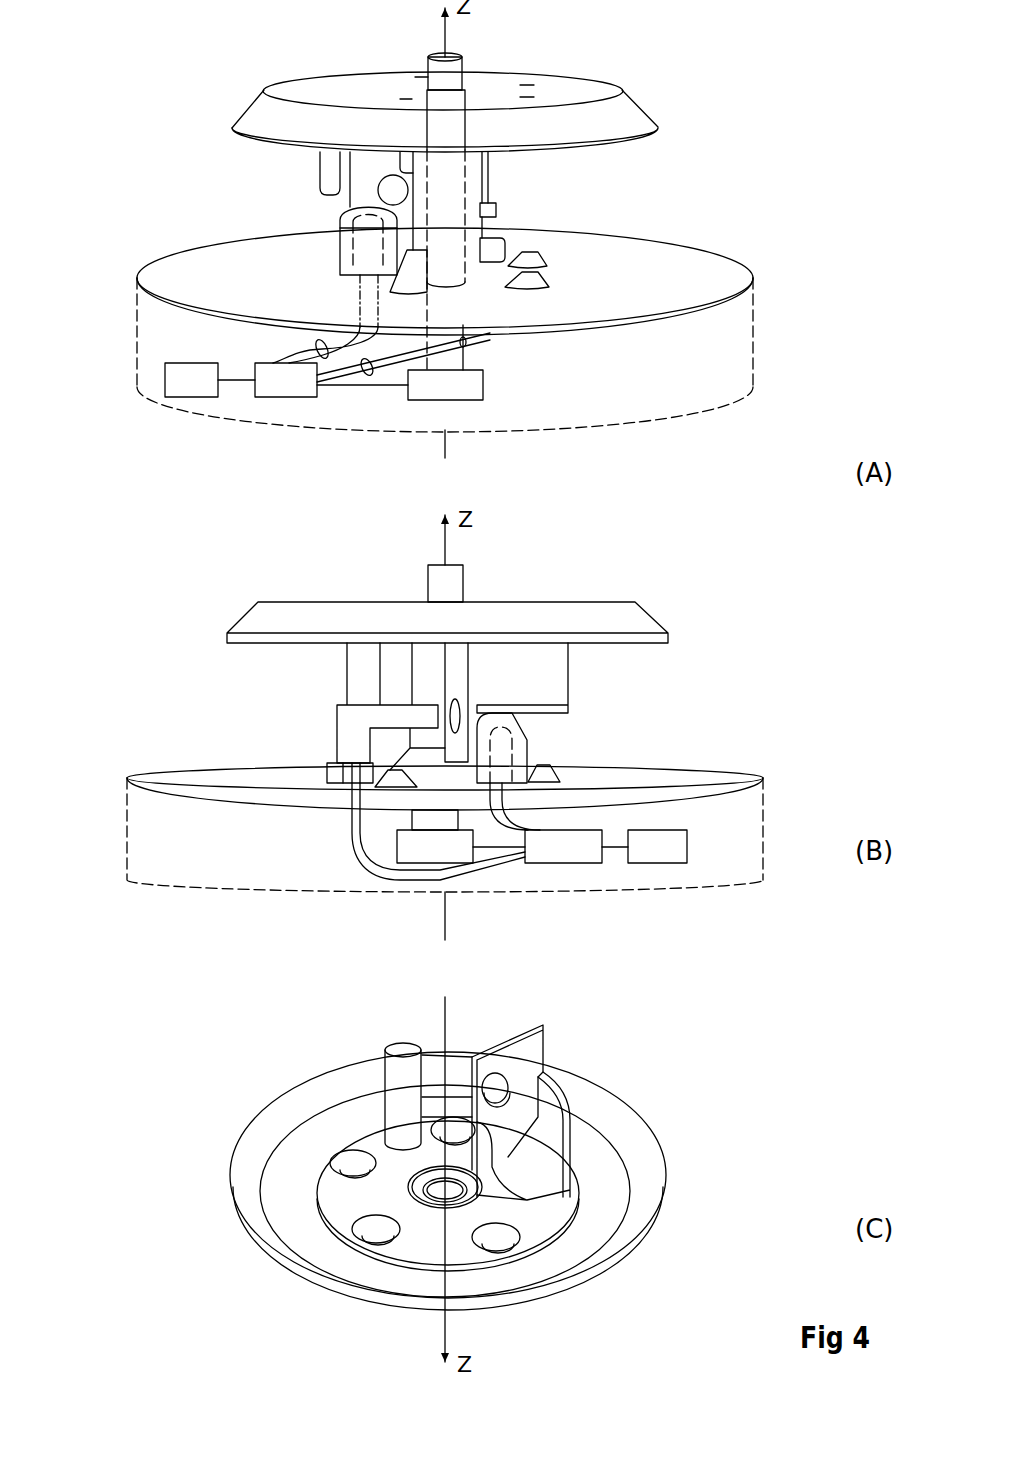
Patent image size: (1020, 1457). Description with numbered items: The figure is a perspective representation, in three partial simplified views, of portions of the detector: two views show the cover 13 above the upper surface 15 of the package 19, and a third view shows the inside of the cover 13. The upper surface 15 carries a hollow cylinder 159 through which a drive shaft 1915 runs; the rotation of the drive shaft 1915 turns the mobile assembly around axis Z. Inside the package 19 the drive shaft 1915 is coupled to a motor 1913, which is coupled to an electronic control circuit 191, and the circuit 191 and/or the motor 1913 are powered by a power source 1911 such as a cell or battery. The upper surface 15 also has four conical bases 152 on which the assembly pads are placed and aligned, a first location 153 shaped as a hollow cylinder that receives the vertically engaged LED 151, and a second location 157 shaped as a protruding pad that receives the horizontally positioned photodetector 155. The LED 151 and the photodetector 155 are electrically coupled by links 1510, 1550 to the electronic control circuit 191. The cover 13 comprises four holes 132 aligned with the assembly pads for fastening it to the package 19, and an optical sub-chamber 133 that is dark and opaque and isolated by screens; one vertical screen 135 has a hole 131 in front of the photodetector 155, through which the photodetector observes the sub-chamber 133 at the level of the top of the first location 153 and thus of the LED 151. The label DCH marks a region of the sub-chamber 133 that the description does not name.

The cover 13 is at (613, 73).
The hole 131 is at (398, 190).
The holes 132 is at (367, 1232).
The optical sub-chamber 133 is at (304, 164).
The screen 135 is at (542, 1021).
The upper surface 15 is at (768, 280).
The LED 151 is at (366, 248).
The conical bases 152 is at (548, 276).
The first location 153 is at (332, 262).
The photodetector 155 is at (502, 209).
The second location 157 is at (510, 245).
The hollow cylinder 159 is at (473, 173).
The package 19 is at (678, 422).
The electronic control circuit 191 is at (288, 401).
The power source 1911 is at (187, 401).
The motor 1913 is at (410, 400).
The drive shaft 1915 is at (466, 47).
The link 1510 is at (312, 340).
The link 1550 is at (370, 383).
The discharge channel DCH is at (361, 180).